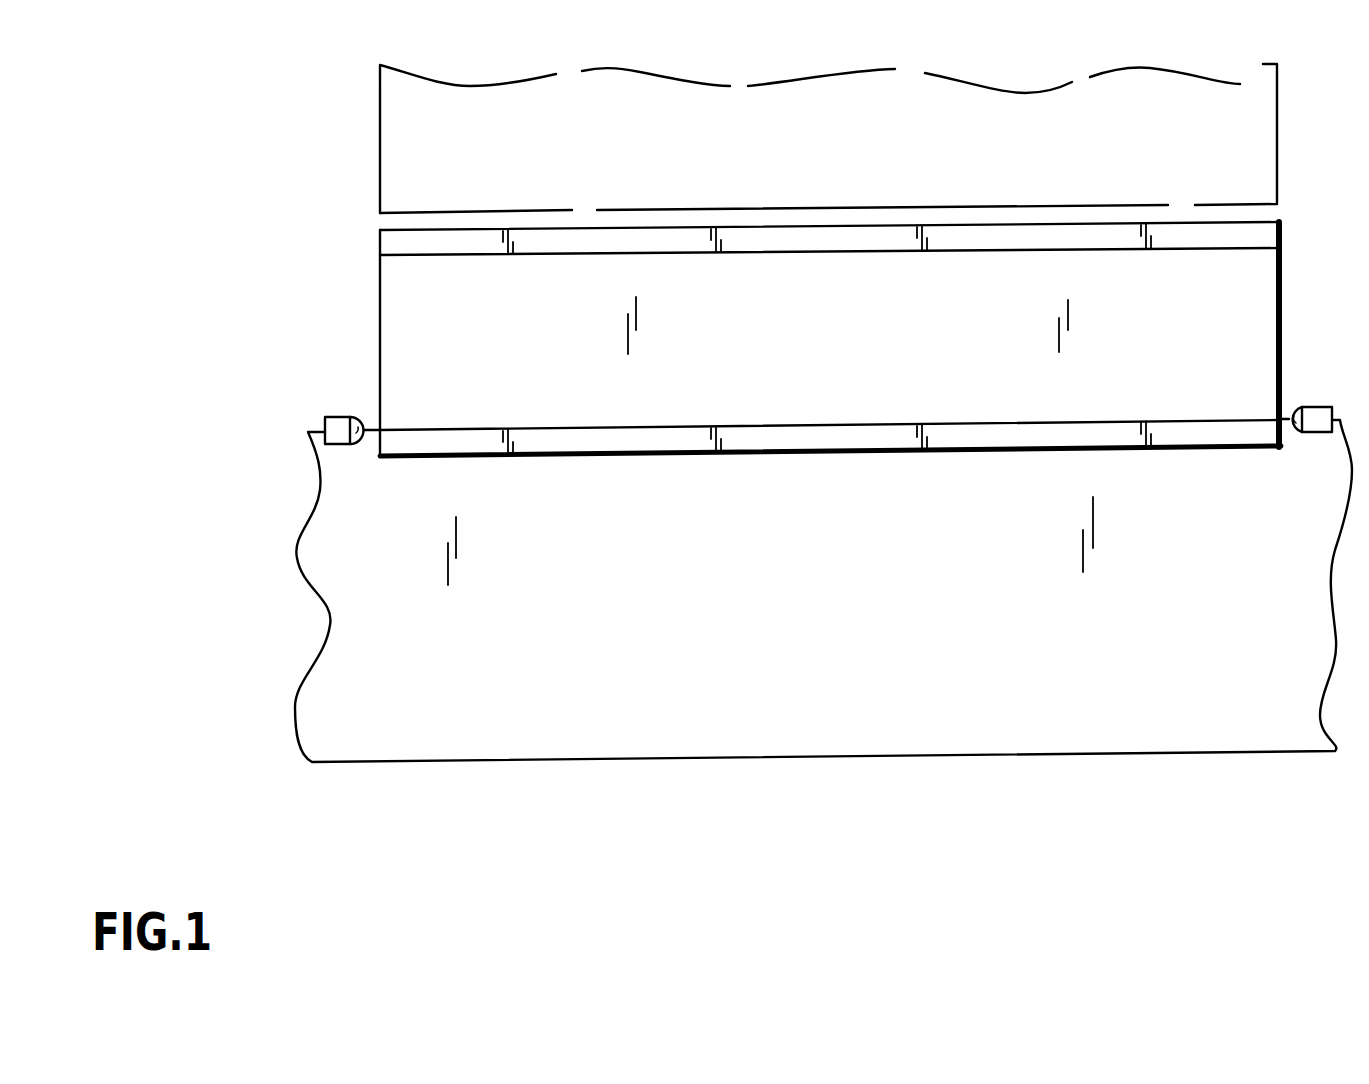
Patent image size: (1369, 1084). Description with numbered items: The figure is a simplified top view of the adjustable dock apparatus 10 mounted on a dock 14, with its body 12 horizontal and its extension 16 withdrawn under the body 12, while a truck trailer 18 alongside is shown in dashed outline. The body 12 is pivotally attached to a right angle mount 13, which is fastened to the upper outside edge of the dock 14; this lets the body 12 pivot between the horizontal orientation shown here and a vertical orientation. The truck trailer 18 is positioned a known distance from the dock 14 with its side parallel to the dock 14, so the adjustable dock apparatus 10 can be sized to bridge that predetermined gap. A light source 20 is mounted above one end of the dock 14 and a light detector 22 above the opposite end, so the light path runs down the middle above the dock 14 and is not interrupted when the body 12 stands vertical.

The adjustable dock apparatus 10 is at (820, 323).
The body 12 is at (825, 345).
The right angle mount 13 is at (430, 443).
The dock 14 is at (825, 612).
The extension 16 is at (403, 243).
The truck trailer 18 is at (825, 173).
The light source 20 is at (1318, 421).
The light detector 22 is at (338, 428).